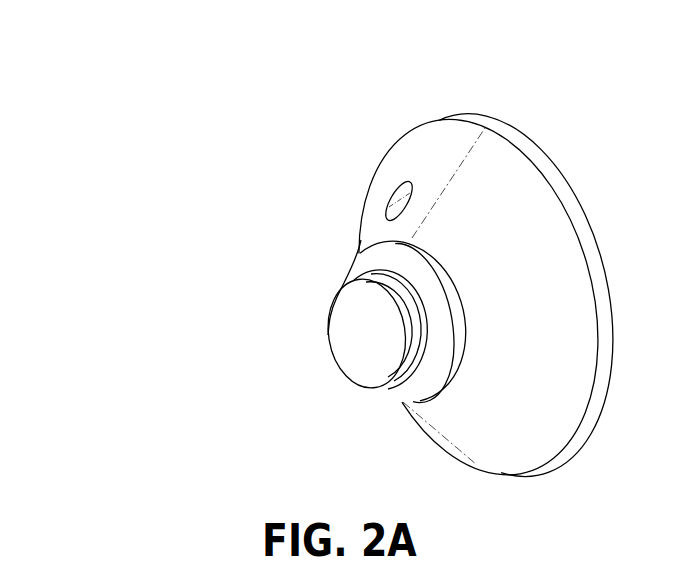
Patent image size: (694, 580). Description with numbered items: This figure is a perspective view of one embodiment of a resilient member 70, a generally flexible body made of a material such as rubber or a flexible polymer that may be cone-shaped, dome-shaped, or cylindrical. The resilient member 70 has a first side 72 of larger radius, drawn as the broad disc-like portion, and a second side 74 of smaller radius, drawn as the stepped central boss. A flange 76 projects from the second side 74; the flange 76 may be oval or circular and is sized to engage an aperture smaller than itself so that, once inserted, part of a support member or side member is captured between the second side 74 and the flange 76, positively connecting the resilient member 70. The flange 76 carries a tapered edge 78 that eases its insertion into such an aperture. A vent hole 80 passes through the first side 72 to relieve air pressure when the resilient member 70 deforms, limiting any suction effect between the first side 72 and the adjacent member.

The resilient member 70 is at (546, 114).
The first side 72 is at (593, 233).
The second side 74 is at (383, 256).
The flange 76 is at (355, 333).
The tapered edge 78 is at (387, 388).
The vent hole 80 is at (403, 188).